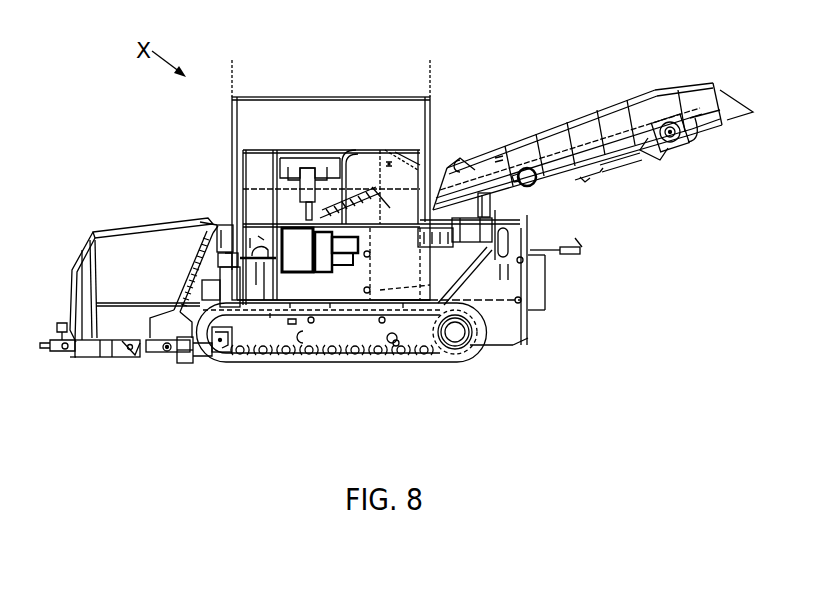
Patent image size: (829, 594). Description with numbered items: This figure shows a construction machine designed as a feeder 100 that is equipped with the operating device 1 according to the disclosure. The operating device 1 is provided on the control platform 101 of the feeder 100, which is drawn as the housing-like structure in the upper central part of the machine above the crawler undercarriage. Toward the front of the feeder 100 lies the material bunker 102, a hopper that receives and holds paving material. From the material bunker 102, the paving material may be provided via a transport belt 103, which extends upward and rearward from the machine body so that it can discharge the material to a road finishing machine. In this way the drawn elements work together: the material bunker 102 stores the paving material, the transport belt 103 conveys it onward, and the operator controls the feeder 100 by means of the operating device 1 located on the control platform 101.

The feeder 100 is at (468, 53).
The control platform 101 is at (414, 119).
The operating device 1 is at (390, 160).
The transport belt 103 is at (556, 128).
The material bunker 102 is at (142, 336).